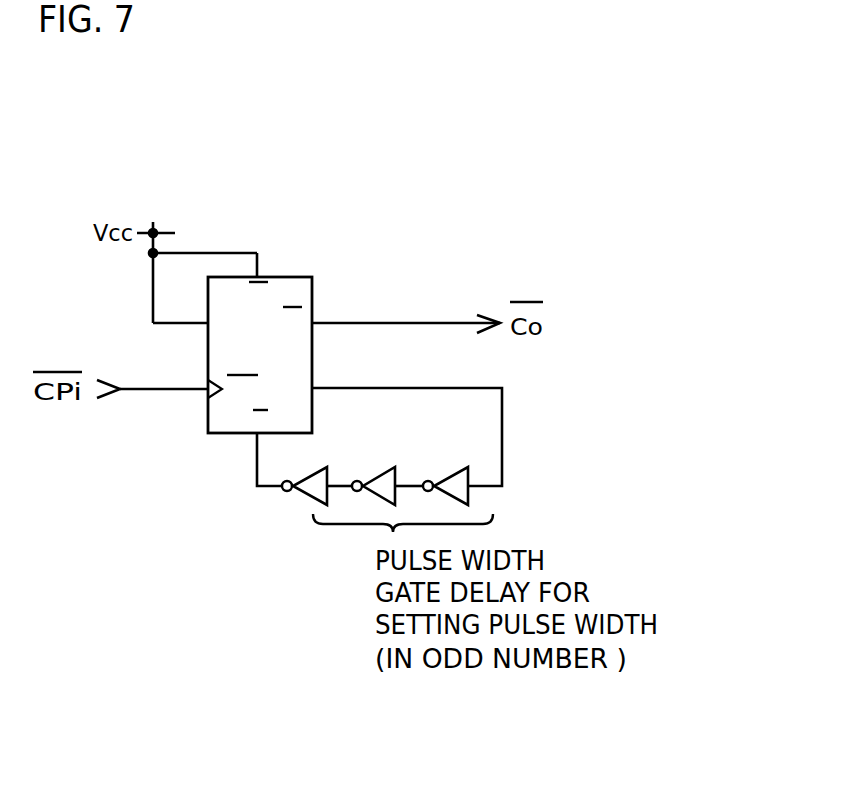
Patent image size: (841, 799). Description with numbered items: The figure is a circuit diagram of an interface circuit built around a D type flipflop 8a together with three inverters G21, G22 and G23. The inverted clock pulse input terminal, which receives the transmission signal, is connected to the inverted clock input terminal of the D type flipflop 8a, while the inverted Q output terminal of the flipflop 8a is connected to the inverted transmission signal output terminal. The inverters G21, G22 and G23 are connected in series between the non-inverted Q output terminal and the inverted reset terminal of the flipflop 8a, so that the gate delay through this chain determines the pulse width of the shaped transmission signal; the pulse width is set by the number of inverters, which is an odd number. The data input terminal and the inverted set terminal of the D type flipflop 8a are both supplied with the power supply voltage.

The D type flipflop 8a is at (290, 275).
The inverter G21 is at (317, 465).
The inverter G22 is at (383, 465).
The inverter G23 is at (452, 465).